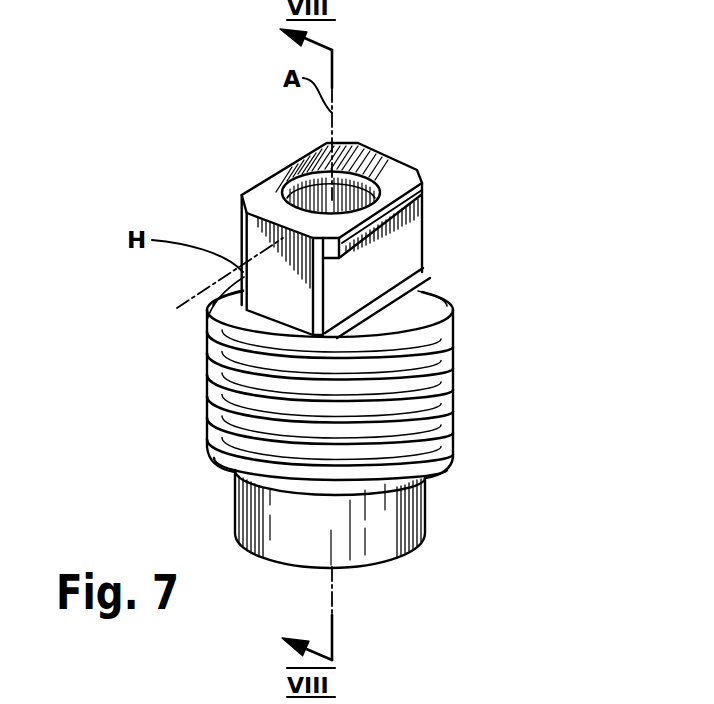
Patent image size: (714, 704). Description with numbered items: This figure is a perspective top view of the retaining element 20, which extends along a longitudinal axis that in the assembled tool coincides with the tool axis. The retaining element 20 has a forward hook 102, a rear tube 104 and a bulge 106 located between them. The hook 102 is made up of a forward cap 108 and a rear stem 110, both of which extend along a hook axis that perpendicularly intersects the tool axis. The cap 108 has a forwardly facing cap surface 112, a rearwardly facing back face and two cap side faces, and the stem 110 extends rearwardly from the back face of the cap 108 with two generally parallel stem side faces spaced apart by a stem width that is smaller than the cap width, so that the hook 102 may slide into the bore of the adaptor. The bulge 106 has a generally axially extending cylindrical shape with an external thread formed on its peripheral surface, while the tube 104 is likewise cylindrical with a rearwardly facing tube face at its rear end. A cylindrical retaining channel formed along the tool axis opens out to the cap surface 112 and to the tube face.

The retaining element 20 is at (145, 90).
The forward hook 102 is at (182, 212).
The rear tube 104 is at (222, 494).
The bulge 106 is at (192, 380).
The forward cap 108 is at (424, 201).
The rear stem 110 is at (393, 268).
The cap surface 112 is at (268, 203).